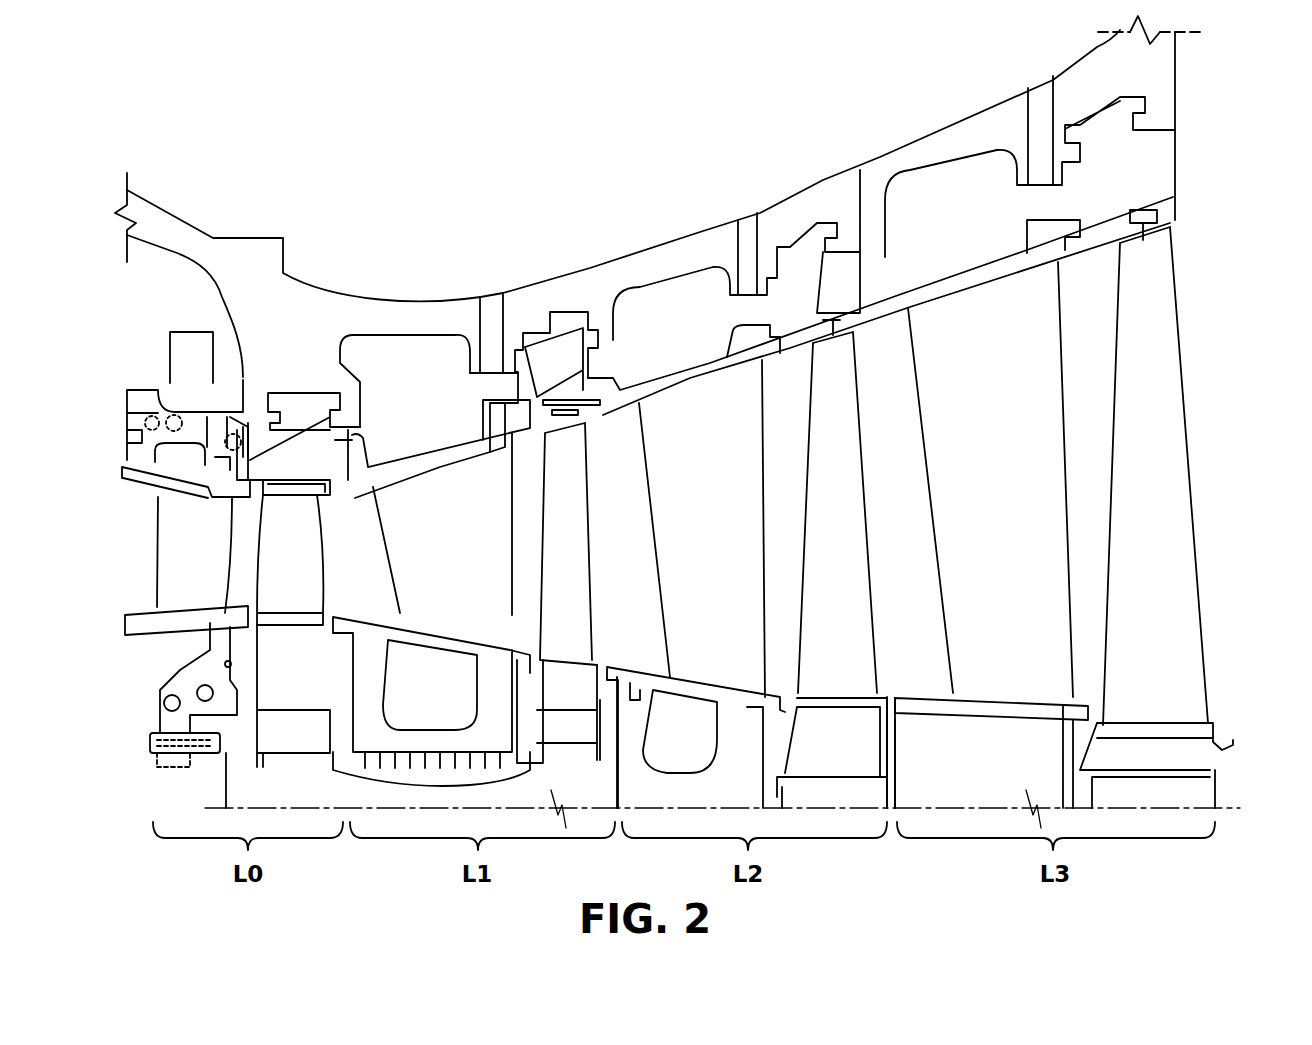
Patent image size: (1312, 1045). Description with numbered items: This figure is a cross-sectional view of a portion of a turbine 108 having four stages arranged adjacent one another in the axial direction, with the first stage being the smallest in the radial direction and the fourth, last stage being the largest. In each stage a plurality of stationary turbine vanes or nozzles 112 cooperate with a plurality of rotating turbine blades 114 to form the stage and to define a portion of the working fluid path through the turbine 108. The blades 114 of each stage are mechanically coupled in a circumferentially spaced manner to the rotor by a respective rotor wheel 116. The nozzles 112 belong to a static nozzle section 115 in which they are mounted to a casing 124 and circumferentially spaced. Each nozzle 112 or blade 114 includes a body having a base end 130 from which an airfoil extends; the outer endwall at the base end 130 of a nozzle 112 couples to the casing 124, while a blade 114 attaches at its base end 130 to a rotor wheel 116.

The turbine 108 is at (400, 280).
The nozzle 112 is at (170, 565).
The blade 114 is at (270, 575).
The static nozzle section 115 is at (700, 356).
The rotor wheel 116 is at (310, 745).
The casing 124 is at (460, 317).
The base end 130 is at (458, 565).